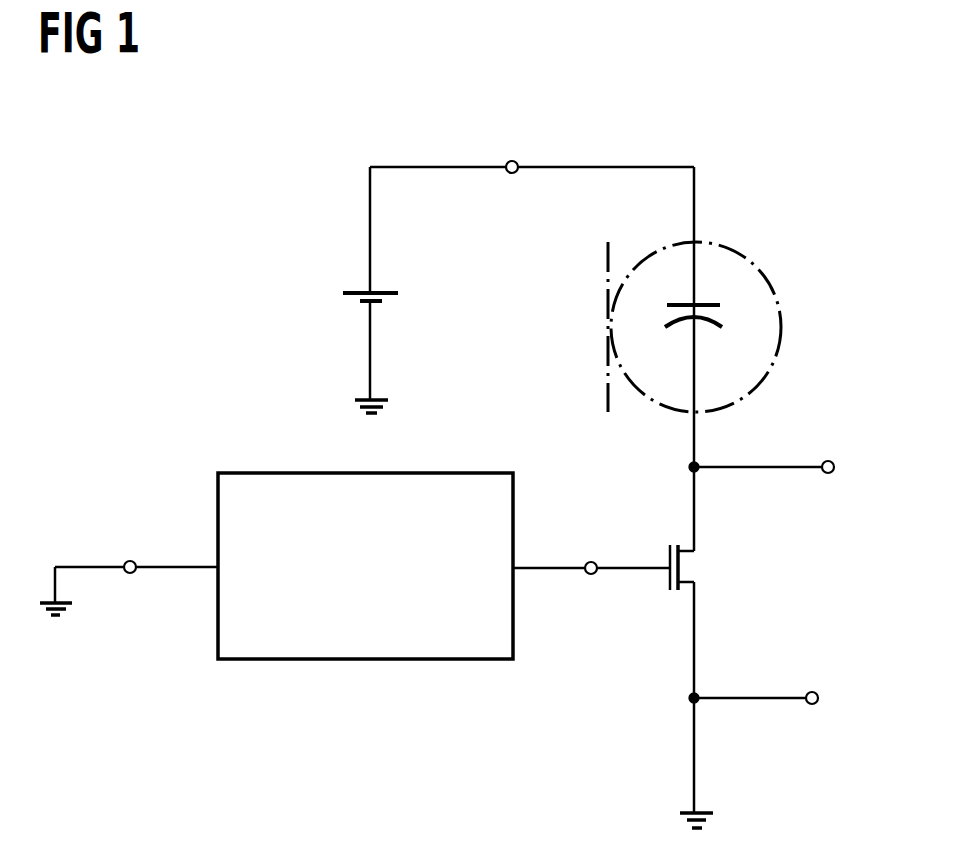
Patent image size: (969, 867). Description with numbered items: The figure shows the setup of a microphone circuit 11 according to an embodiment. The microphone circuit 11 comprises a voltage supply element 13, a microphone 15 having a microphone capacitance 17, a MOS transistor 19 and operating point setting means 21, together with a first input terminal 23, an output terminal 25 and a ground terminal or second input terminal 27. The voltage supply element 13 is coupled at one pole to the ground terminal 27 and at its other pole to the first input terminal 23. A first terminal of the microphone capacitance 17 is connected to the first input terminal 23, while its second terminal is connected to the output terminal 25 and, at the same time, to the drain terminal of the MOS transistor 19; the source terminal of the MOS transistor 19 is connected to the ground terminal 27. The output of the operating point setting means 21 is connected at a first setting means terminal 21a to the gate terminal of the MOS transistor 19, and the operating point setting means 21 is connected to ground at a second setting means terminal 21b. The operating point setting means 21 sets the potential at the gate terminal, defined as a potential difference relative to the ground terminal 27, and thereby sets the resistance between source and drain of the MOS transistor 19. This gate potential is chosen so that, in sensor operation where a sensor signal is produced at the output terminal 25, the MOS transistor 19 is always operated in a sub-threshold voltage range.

The microphone circuit 11 is at (700, 90).
The voltage supply element 13 is at (386, 290).
The microphone 15 is at (712, 242).
The microphone capacitance 17 is at (684, 326).
The MOS transistor 19 is at (682, 560).
The operating point setting means 21 is at (365, 662).
The first setting means terminal 21a is at (590, 575).
The second setting means terminal 21b is at (131, 560).
The first input terminal 23 is at (512, 160).
The output terminal 25 is at (828, 474).
The ground terminal 27 is at (812, 705).